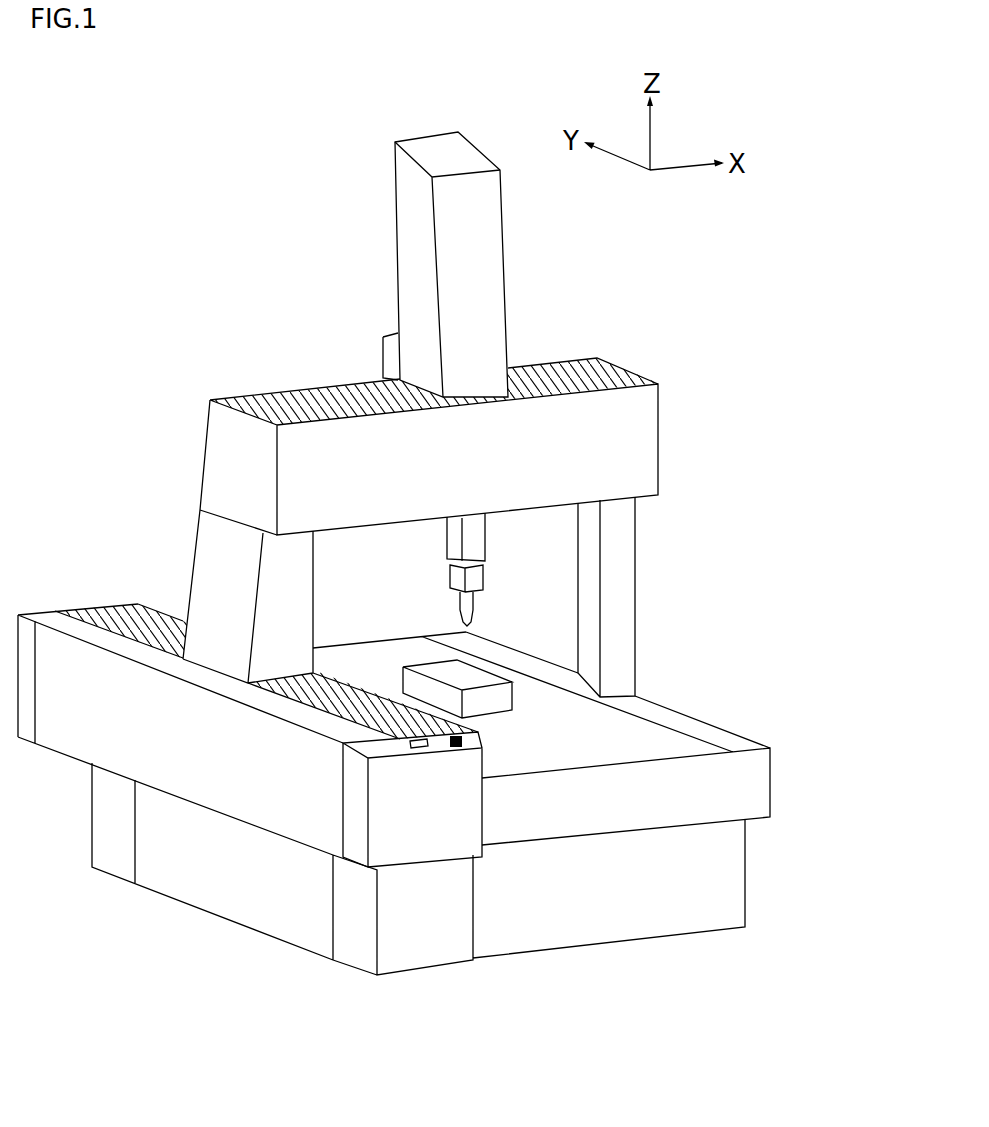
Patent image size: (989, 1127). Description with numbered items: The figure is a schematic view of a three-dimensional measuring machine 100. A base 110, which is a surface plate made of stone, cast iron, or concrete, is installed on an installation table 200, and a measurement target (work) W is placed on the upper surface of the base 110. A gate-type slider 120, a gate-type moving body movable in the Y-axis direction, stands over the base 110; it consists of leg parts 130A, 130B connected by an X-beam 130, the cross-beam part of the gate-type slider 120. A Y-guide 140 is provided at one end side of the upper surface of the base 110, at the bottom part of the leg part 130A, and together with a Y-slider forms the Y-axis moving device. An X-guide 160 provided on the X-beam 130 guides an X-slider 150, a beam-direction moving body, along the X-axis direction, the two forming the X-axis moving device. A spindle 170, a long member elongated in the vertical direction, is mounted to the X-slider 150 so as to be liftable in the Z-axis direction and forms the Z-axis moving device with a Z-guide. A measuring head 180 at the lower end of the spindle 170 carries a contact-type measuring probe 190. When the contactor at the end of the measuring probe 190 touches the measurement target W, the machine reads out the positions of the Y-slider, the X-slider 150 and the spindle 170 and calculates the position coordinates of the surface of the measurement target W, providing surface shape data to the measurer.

The three-dimensional measuring machine 100 is at (305, 160).
The base 110 is at (673, 742).
The gate-type slider 120 is at (192, 290).
The X-beam 130 is at (648, 440).
The leg part 130A is at (230, 595).
The leg part 130B is at (622, 603).
The Y-guide 140 is at (322, 712).
The X-slider 150 is at (493, 318).
The X-guide 160 is at (317, 388).
The spindle 170 is at (470, 540).
The measuring head 180 is at (472, 580).
The contact-type measuring probe 190 is at (462, 624).
The installation table 200 is at (647, 923).
The measurement target (work) W is at (513, 697).